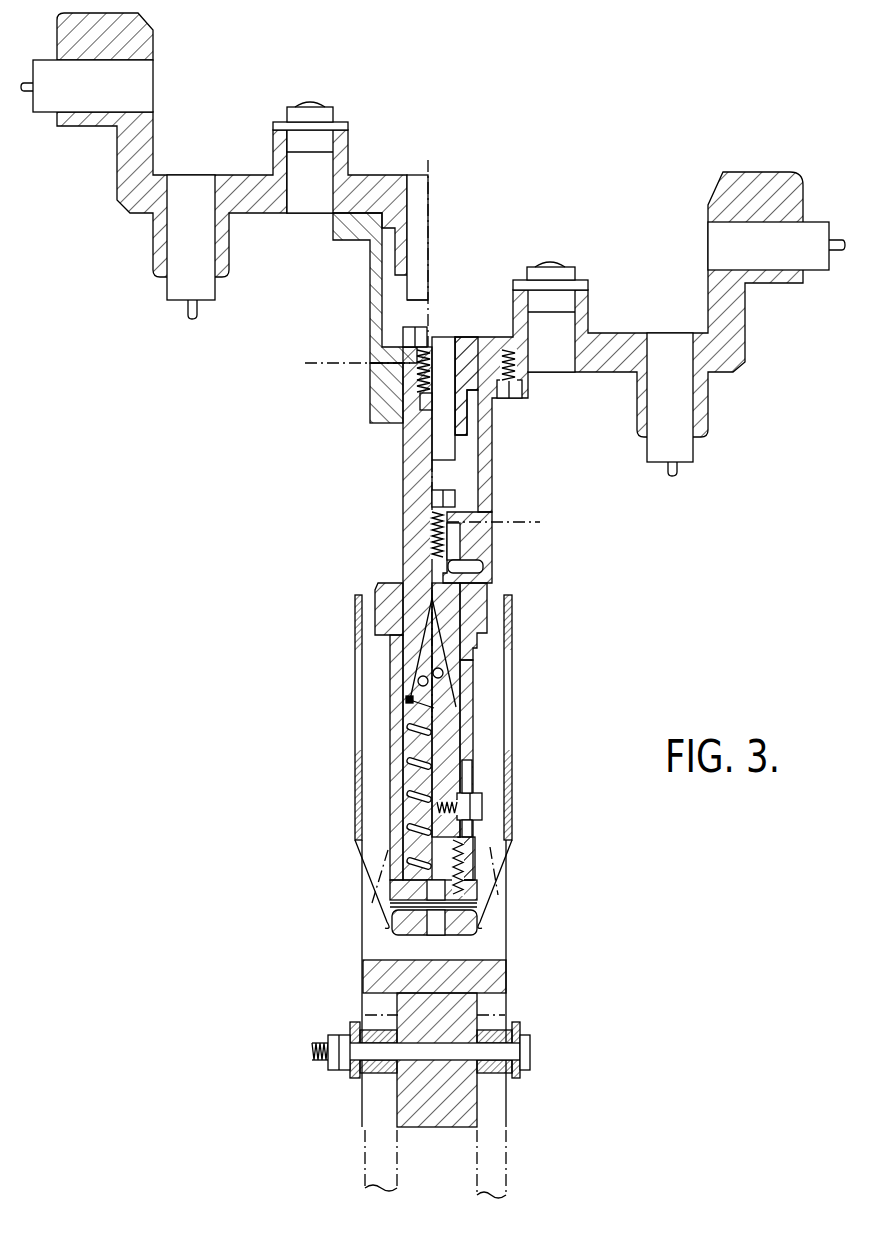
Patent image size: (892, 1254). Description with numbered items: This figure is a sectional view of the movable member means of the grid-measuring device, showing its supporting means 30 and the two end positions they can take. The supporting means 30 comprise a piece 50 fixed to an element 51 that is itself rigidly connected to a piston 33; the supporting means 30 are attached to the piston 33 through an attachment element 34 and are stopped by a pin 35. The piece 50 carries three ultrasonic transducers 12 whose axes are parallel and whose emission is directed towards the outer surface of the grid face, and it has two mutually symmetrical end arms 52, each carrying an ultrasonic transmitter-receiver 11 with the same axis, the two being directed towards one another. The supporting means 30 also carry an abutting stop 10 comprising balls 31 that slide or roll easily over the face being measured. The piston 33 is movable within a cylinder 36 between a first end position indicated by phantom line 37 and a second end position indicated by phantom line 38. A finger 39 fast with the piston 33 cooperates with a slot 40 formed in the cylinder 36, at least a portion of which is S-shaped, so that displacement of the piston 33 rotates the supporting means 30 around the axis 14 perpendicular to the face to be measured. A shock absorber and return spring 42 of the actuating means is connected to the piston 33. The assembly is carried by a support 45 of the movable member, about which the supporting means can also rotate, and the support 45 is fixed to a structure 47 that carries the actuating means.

The abutting stop 10 is at (312, 115).
The ultrasonic transducer 11 is at (75, 95).
The ultrasonic transducer 12 is at (188, 283).
The axis 14 is at (431, 161).
The supporting means 30 is at (367, 293).
The balls 31 is at (310, 103).
The piston 33 is at (455, 538).
The attachment element 34 is at (447, 521).
The pin 35 is at (470, 567).
The cylinder 36 is at (392, 608).
The phantom line 37 is at (312, 363).
The phantom line 38 is at (545, 521).
The finger 39 is at (470, 800).
The slot 40 is at (468, 670).
The shock absorber and return spring 42 is at (412, 823).
The support 45 is at (465, 975).
The structure 47 is at (497, 1164).
The piece 50 is at (393, 183).
The element 51 is at (387, 400).
The end arm 52 is at (135, 137).